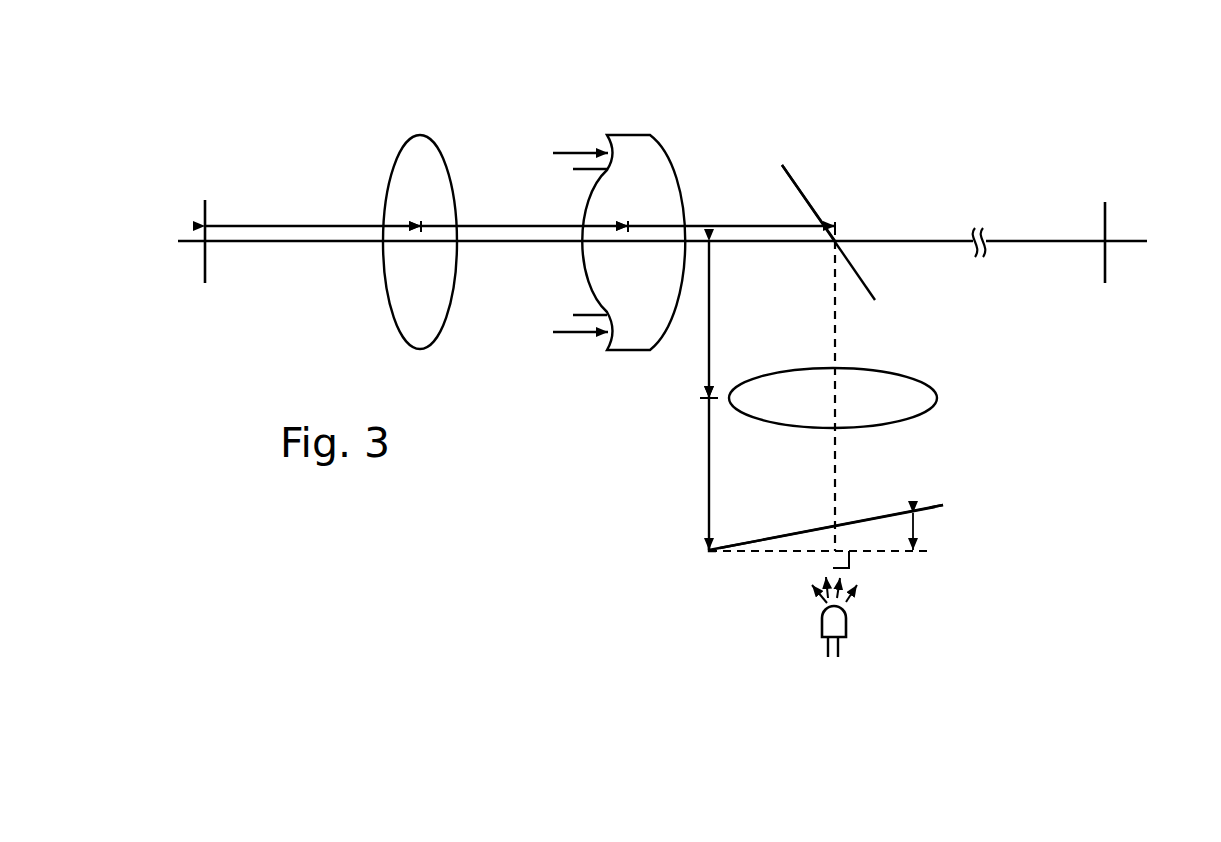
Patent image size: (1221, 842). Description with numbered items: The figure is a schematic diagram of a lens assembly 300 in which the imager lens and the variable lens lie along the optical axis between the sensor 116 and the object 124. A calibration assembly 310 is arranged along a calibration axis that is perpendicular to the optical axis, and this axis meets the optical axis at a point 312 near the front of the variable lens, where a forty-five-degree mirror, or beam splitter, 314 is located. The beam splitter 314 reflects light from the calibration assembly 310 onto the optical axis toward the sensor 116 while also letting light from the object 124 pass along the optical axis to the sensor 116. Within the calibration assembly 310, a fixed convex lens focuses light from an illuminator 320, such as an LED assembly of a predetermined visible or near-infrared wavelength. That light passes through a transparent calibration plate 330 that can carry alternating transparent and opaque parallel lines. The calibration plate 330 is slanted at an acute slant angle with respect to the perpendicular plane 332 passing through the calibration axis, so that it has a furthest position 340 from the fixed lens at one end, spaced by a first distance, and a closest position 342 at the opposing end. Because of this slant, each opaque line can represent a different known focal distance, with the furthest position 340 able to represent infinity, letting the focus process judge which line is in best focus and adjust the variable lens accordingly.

The sensor 116 is at (204, 208).
The object 124 is at (1105, 212).
The lens assembly 300 is at (1040, 116).
The calibration assembly 310 is at (949, 443).
The point 312 is at (837, 238).
The 45-degree mirror (beam splitter) 314 is at (796, 181).
The illuminator 320 is at (818, 628).
The calibration plate 330 is at (946, 503).
The perpendicular plane 332 is at (768, 552).
The furthest position 340 is at (710, 553).
The closest position 342 is at (945, 505).